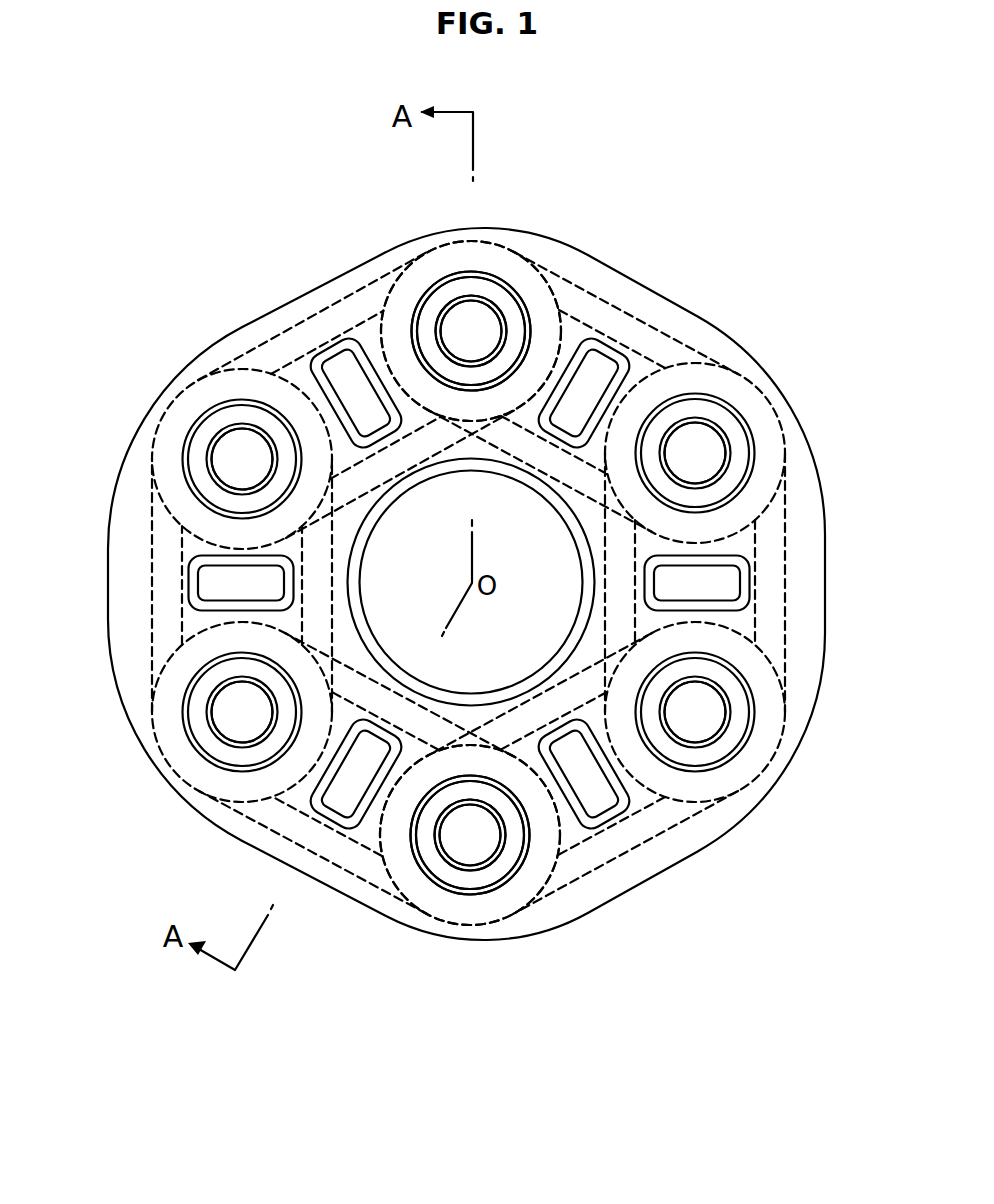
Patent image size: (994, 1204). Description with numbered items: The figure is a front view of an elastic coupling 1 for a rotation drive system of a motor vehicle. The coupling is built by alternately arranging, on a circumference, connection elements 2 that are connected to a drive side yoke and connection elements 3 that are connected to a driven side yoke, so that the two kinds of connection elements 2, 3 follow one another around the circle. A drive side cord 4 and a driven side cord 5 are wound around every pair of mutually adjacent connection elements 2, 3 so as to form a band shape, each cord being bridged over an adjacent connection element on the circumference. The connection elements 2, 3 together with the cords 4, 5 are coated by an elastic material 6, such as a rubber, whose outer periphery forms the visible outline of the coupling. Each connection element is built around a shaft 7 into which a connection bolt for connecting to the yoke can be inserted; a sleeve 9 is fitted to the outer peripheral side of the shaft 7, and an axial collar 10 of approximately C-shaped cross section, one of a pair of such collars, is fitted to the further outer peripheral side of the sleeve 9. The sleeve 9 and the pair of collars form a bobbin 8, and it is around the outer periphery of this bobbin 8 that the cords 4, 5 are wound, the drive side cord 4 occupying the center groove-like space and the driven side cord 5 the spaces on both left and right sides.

The elastic coupling 1 is at (677, 270).
The connection element 2 is at (468, 285).
The connection element 3 is at (204, 438).
The drive side cord 4 is at (273, 357).
The driven side cord 5 is at (170, 581).
The elastic material 6 is at (313, 303).
The shaft 7 is at (490, 288).
The bobbin 8 is at (446, 283).
The sleeve 9 is at (508, 290).
The axial collar 10 is at (528, 268).